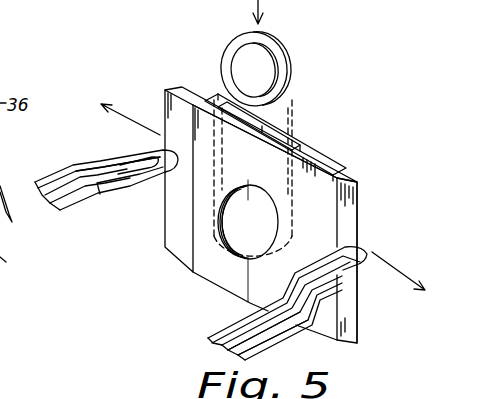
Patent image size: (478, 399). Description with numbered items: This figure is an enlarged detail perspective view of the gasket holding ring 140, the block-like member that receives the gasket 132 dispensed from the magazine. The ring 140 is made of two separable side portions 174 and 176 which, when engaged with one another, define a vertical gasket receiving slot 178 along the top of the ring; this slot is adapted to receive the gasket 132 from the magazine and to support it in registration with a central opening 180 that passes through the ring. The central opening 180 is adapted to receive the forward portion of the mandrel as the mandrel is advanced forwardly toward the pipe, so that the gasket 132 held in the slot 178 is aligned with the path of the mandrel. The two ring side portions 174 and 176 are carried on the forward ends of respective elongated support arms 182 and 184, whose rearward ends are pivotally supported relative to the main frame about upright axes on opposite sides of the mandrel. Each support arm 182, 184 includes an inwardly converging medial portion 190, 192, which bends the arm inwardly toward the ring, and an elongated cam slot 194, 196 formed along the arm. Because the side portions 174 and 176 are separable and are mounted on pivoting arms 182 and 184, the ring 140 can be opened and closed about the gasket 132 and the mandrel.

The gasket 132 is at (290, 72).
The gasket holding ring 140 is at (349, 156).
The side portion 174 is at (200, 112).
The side portion 176 is at (333, 217).
The vertical gasket receiving slot 178 is at (286, 141).
The central opening 180 is at (245, 218).
The support arm 182 is at (57, 178).
The support arm 184 is at (258, 340).
The inwardly converging medial portion 190 is at (103, 164).
The inwardly converging medial portion 192 is at (305, 302).
The elongated cam slot 194 is at (135, 160).
The elongated cam slot 196 is at (358, 268).